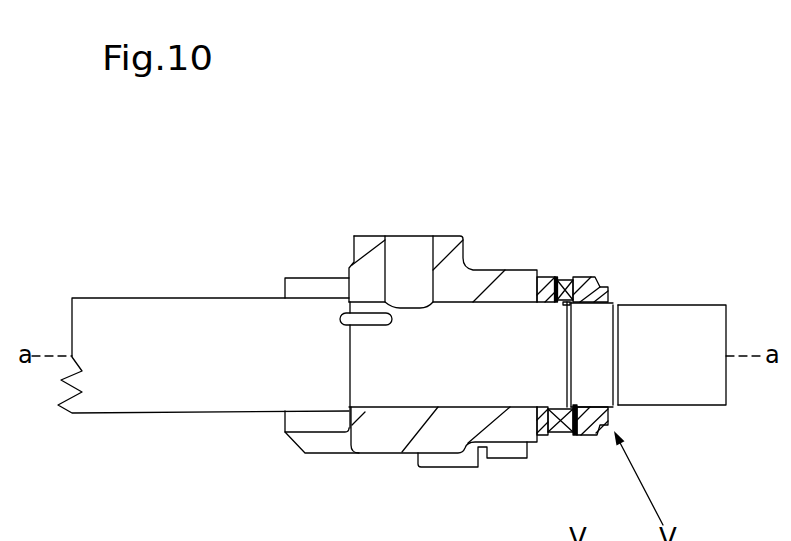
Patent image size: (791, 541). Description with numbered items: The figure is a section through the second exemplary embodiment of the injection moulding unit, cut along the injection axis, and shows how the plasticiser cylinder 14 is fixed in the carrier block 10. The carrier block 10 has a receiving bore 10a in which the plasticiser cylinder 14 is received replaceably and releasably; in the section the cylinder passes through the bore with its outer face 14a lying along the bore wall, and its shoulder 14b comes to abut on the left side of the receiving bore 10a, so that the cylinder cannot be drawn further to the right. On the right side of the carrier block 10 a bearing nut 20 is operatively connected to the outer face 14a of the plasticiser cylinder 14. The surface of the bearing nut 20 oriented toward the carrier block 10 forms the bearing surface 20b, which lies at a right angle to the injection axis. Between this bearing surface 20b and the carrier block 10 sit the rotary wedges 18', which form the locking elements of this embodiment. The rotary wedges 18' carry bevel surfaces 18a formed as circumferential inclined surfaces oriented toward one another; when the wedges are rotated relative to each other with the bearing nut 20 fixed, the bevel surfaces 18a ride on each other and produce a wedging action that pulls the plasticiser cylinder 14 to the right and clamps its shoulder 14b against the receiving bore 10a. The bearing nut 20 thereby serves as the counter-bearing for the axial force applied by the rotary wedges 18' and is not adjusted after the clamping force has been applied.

The carrier block 10 is at (411, 353).
The receiving bore 10a is at (398, 398).
The plasticiser cylinder 14 is at (392, 299).
The outer face 14a is at (200, 356).
The shoulder 14b is at (342, 304).
The rotary wedges 18' is at (567, 334).
The bevel surfaces 18a is at (573, 203).
The bearing nut 20 is at (575, 300).
The bearing surface 20b is at (548, 430).